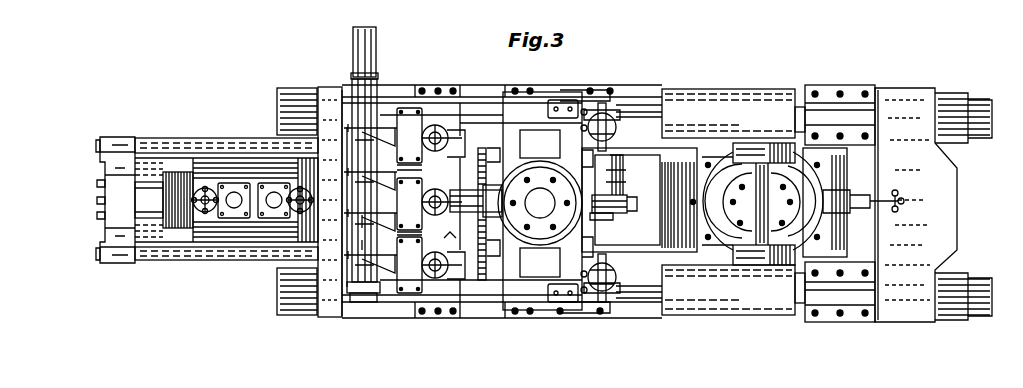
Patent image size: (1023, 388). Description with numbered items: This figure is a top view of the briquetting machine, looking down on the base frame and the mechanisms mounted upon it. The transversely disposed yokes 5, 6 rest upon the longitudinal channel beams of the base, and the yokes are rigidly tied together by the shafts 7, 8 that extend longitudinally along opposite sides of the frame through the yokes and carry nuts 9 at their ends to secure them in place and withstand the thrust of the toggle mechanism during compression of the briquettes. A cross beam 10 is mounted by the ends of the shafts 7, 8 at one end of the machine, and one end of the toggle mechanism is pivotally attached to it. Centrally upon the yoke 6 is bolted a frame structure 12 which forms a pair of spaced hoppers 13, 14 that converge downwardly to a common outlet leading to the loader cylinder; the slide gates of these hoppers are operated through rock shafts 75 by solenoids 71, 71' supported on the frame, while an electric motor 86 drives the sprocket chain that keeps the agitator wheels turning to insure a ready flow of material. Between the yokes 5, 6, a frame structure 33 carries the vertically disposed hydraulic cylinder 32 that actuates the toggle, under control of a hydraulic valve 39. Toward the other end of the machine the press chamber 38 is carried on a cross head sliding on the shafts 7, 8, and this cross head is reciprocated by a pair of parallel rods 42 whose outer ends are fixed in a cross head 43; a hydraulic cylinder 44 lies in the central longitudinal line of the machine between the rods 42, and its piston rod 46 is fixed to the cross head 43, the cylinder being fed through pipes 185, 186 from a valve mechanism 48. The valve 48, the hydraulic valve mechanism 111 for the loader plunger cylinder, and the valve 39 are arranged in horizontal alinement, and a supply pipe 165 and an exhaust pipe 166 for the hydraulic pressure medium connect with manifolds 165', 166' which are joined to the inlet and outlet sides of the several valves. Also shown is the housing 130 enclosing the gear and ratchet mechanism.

The yoke 5 is at (848, 265).
The yoke 6 is at (527, 270).
The shaft 7 is at (642, 300).
The shaft 8 is at (640, 102).
The nut 9 is at (286, 88).
The cross beam 10 is at (957, 187).
The frame structure 12 is at (513, 125).
The hopper 13 is at (540, 144).
The hopper 14 is at (540, 262).
The hydraulic cylinder 32 is at (720, 153).
The frame structure 33 is at (663, 160).
The press chamber 38 is at (767, 147).
The hydraulic valve 39 is at (441, 160).
The parallel rod 42 is at (160, 147).
The cross head 43 is at (100, 171).
The hydraulic cylinder 44 is at (242, 232).
The rod 46 is at (143, 202).
The valve mechanism 48 is at (432, 285).
The solenoid 71 is at (608, 301).
The solenoid 71' is at (616, 105).
The rock shaft 75 is at (565, 108).
The electric motor 86 is at (498, 295).
The hydraulic valve mechanism 111 is at (455, 229).
The housing 130 is at (620, 220).
The supply pipe 165 is at (346, 172).
The manifold 165' is at (323, 297).
The exhaust pipe 166 is at (337, 48).
The manifold 166' is at (297, 291).
The pipe 185 is at (230, 194).
The pipe 186 is at (270, 192).